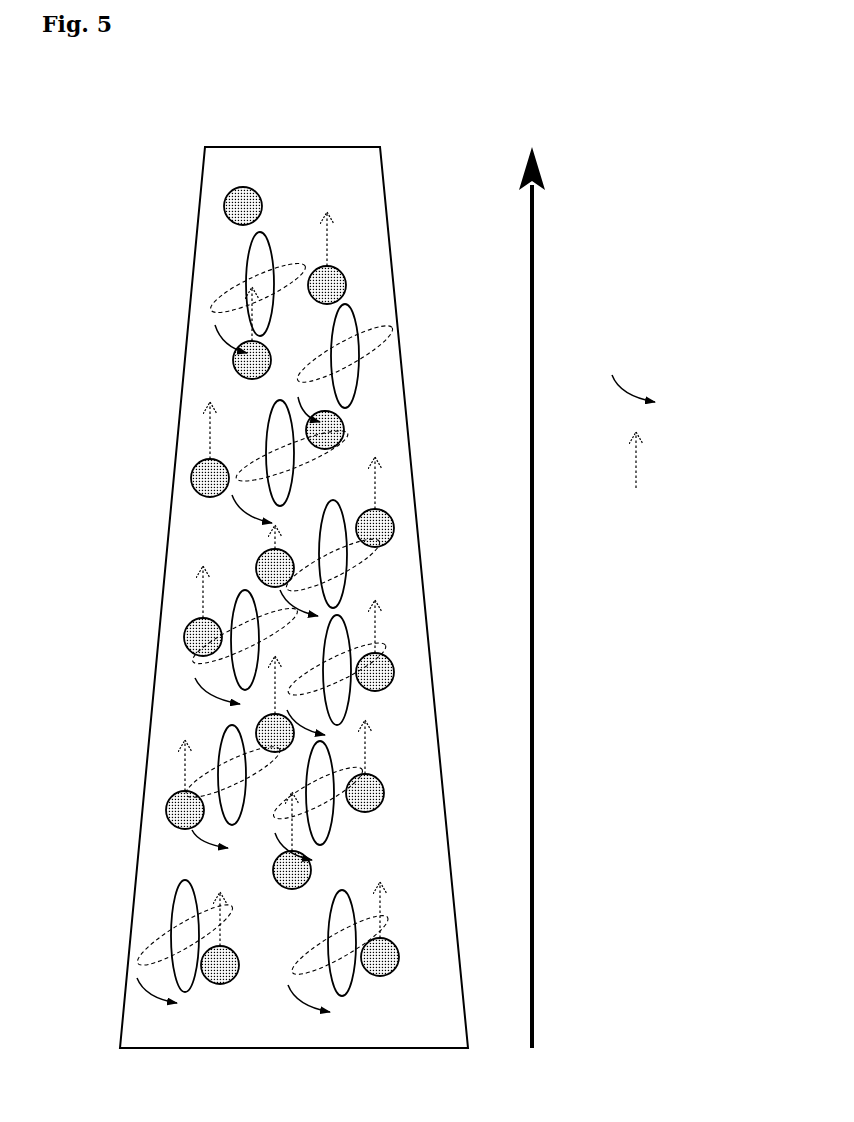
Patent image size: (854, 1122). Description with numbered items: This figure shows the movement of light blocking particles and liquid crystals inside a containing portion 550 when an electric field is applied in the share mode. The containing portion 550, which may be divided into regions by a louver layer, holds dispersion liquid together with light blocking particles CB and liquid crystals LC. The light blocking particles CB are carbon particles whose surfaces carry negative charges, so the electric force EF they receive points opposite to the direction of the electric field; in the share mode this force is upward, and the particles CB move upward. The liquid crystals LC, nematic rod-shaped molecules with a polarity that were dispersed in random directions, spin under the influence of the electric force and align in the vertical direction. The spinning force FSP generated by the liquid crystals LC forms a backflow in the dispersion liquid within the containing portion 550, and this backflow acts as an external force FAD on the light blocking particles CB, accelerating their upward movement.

The containing portion 550 is at (143, 120).
The light blocking particles CB is at (223, 206).
The liquid crystals LC is at (246, 255).
The spinning force FSP is at (668, 390).
The external force FAD is at (680, 460).
The electric force EF is at (554, 597).